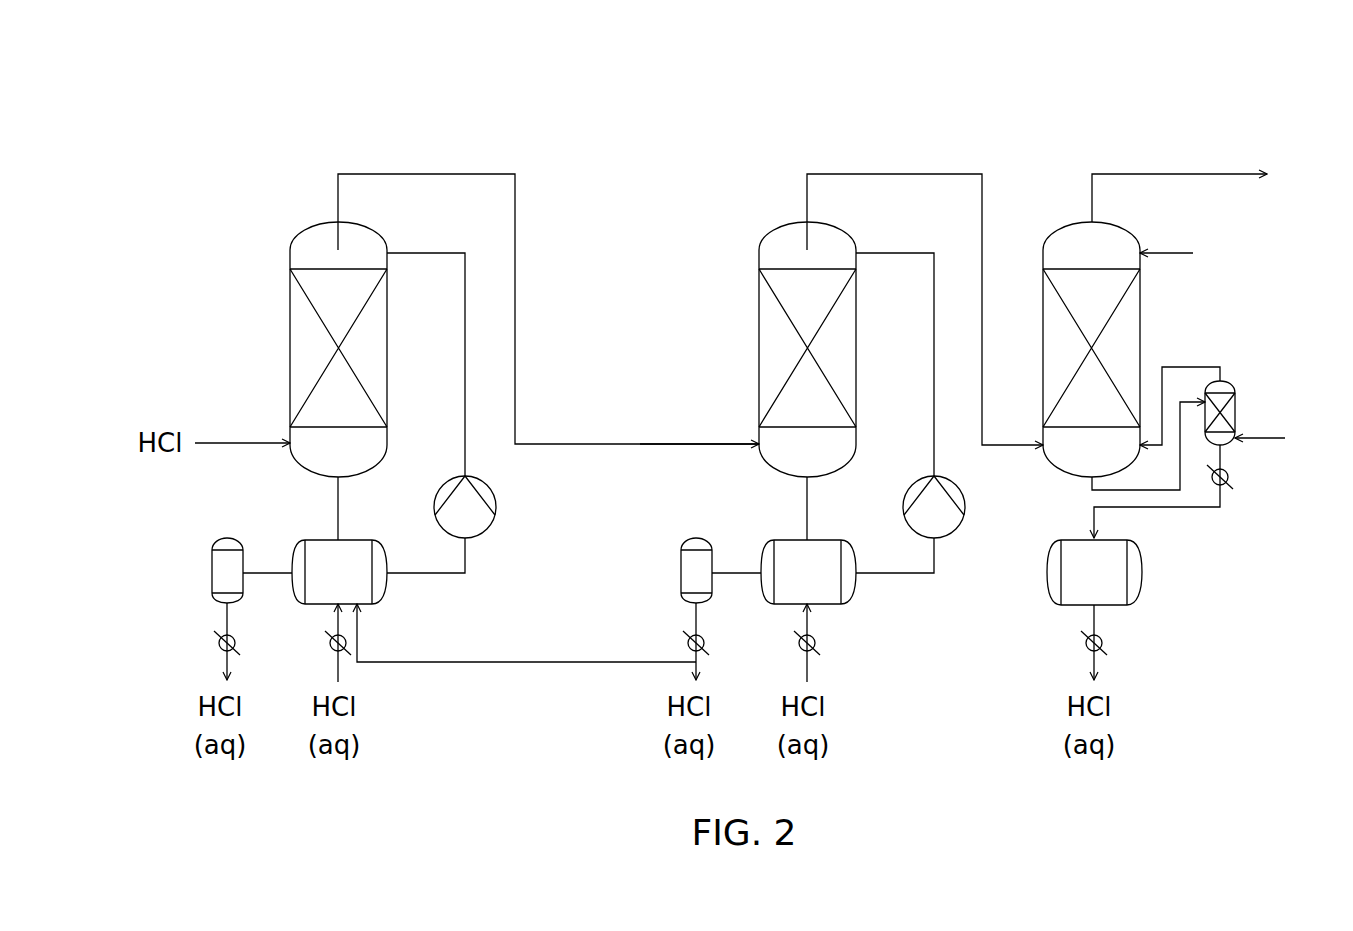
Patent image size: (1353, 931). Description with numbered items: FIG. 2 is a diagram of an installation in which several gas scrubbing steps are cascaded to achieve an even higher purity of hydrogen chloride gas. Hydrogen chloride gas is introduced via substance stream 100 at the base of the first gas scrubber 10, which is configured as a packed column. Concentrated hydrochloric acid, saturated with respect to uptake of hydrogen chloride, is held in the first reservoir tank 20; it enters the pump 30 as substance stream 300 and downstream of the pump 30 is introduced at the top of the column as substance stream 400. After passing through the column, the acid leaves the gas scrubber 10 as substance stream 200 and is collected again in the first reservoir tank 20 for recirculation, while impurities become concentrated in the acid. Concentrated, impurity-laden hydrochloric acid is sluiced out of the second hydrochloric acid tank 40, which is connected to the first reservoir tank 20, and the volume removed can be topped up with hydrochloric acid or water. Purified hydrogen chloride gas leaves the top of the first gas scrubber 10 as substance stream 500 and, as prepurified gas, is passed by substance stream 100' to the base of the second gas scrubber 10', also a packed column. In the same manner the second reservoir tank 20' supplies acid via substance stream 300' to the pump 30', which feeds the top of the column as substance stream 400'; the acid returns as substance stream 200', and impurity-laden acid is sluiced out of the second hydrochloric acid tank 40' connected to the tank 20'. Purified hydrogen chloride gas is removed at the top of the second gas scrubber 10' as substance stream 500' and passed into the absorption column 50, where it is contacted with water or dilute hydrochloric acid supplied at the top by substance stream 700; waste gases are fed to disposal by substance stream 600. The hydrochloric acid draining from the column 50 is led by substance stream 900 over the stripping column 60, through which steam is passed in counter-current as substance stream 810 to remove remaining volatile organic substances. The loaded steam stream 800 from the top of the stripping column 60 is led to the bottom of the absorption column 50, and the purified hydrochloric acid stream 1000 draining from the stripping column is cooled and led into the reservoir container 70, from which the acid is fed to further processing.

The first gas scrubber 10 is at (297, 336).
The second gas scrubber 10' is at (765, 336).
The first reservoir tank 20 is at (383, 596).
The second reservoir tank 20' is at (854, 596).
The pump 30 is at (502, 536).
The pump 30' is at (971, 536).
The second hydrochloric acid tank 40 is at (210, 587).
The second hydrochloric acid tank 40' is at (679, 588).
The absorption column 50 is at (1077, 222).
The stripping column 60 is at (1235, 400).
The reservoir container 70 is at (1142, 593).
The substance stream 100 is at (237, 397).
The substance stream 100' is at (699, 398).
The substance stream 200 is at (279, 508).
The substance stream 200' is at (749, 508).
The substance stream 300 is at (472, 586).
The substance stream 300' is at (943, 585).
The substance stream 400 is at (426, 336).
The substance stream 400' is at (895, 336).
The substance stream 500 is at (548, 262).
The substance stream 500' is at (925, 263).
The substance stream 600 is at (1183, 173).
The substance stream 700 is at (1173, 252).
The loaded steam stream 800 is at (1190, 367).
The substance stream 810 is at (1250, 440).
The substance stream 900 is at (1092, 482).
The purified hydrochloric acid stream 1000 is at (1213, 510).